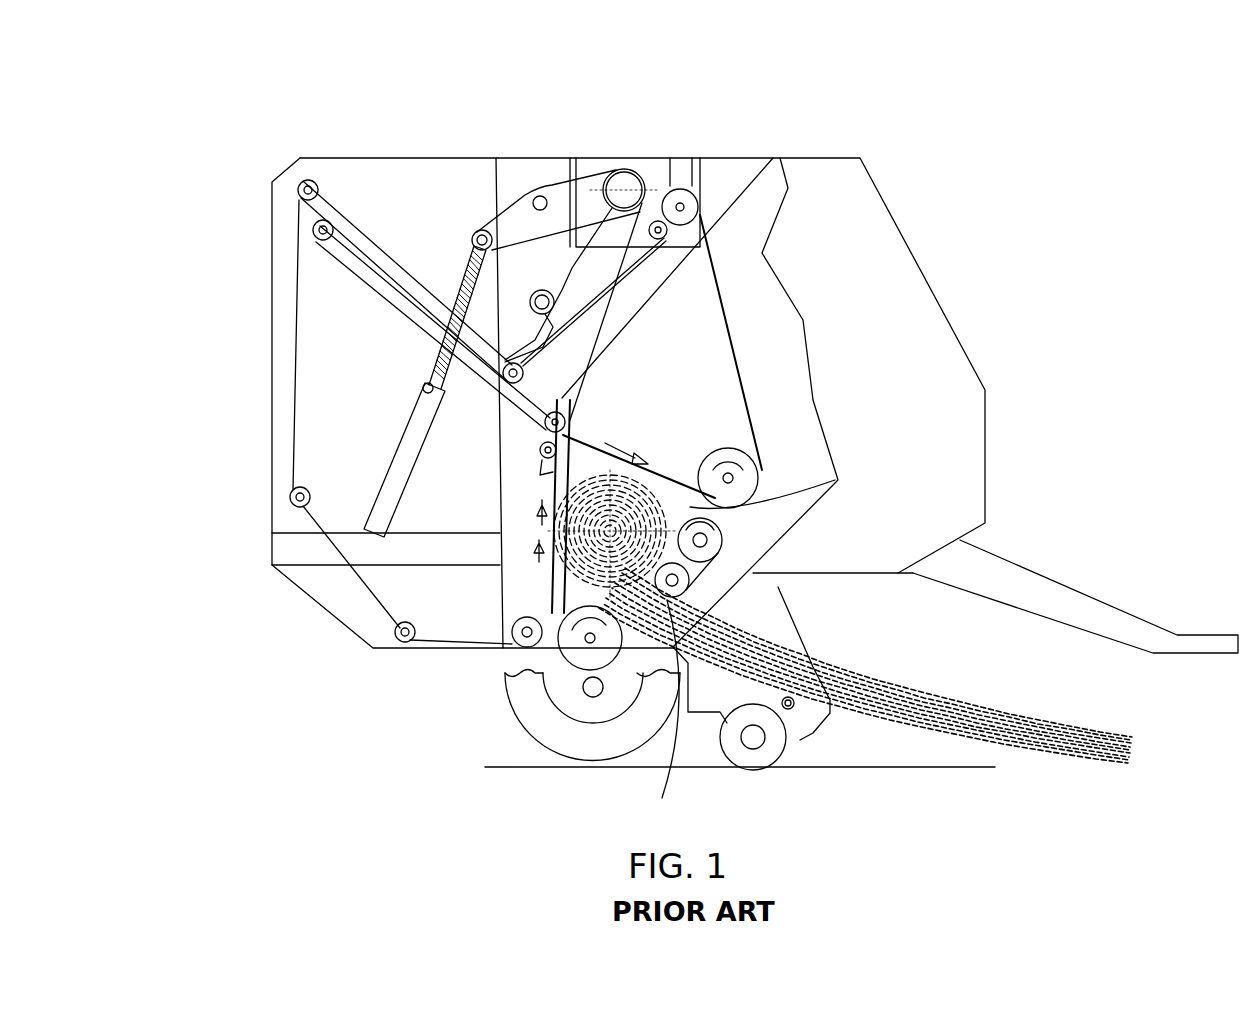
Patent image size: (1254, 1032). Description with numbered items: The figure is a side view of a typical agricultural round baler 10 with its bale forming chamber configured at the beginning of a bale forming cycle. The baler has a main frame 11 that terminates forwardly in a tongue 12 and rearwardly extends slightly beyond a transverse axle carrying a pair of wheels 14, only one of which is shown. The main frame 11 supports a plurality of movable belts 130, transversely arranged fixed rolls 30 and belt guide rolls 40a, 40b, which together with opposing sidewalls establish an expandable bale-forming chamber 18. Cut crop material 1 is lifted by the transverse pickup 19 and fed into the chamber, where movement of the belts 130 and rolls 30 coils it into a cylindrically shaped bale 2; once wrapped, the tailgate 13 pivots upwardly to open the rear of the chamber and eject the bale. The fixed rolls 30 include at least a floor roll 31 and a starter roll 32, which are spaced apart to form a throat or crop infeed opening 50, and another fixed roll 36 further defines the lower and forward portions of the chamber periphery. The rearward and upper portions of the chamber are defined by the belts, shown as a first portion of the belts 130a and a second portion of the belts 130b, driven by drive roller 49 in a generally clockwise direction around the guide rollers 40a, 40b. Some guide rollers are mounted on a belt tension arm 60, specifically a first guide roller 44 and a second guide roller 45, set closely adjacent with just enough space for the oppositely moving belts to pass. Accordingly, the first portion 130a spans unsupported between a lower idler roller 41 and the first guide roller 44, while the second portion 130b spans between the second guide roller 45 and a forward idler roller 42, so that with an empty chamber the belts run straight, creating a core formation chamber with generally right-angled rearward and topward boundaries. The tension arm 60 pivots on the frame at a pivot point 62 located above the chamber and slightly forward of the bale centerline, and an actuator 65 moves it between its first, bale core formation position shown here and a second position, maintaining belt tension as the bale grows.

The round baler 10 is at (912, 90).
The tailgate 13 is at (350, 158).
The main frame 11 is at (898, 576).
The tongue 12 is at (1050, 575).
The wheels 14 is at (540, 737).
The crop infeed opening 50 is at (662, 798).
The pickup 19 is at (818, 713).
The cut crop material 1 is at (965, 712).
The bale 2 is at (760, 455).
The movable belts 130 is at (730, 307).
The first portion of the belts 130a is at (550, 485).
The second portion of the belts 130b is at (580, 440).
The pivot point 62 is at (622, 218).
The belt tension arm 60 is at (590, 268).
The actuator 65 is at (470, 295).
The belt guide rolls 40a is at (308, 185).
The belt guide rolls 40b is at (323, 230).
The drive roller 49 is at (700, 222).
The second guide roller 45 is at (565, 420).
The first guide roller 44 is at (540, 455).
The forward idler roller 42 is at (760, 478).
The bale-forming chamber 18 is at (700, 507).
The fixed roll 36 is at (725, 538).
The fixed rolls 30 is at (705, 580).
The starter roll 32 is at (690, 590).
The floor roll 31 is at (577, 660).
The lower idler roller 41 is at (530, 652).